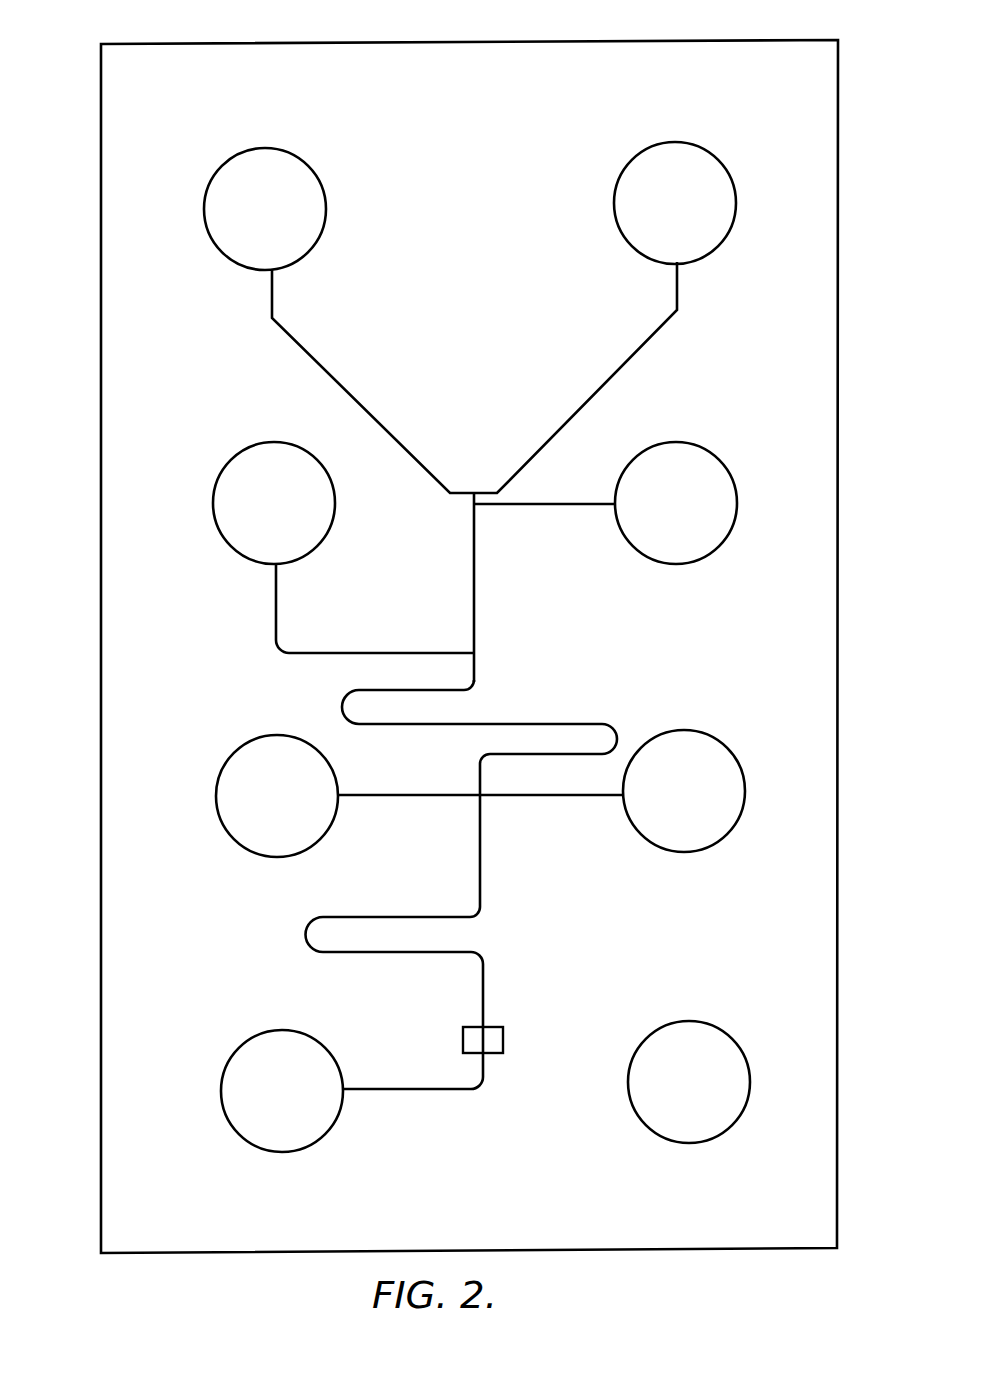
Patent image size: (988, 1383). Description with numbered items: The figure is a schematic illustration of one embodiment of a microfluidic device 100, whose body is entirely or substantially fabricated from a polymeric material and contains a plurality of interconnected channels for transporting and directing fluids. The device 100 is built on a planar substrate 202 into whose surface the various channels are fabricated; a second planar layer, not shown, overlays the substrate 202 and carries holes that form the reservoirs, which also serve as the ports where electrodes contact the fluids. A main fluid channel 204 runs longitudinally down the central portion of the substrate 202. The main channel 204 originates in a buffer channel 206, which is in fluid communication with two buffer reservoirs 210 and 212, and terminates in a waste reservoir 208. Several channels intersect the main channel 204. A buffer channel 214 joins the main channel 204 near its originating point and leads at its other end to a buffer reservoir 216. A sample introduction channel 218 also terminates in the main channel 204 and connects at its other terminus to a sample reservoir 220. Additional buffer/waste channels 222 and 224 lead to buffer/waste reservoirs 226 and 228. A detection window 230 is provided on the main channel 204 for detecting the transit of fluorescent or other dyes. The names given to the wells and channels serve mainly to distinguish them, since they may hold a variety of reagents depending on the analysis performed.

The microfluidic device 100 is at (94, 16).
The planar substrate 202 is at (791, 37).
The main fluid channel 204 is at (476, 606).
The buffer channel 206 is at (385, 430).
The waste reservoir 208 is at (306, 1030).
The buffer reservoir 210 is at (297, 158).
The buffer reservoir 212 is at (713, 155).
The buffer channel 214 is at (540, 502).
The buffer reservoir 216 is at (706, 450).
The sample introduction channel 218 is at (365, 653).
The sample reservoir 220 is at (326, 477).
The buffer/waste channel 222 is at (378, 796).
The buffer/waste channel 224 is at (546, 781).
The buffer/waste reservoir 226 is at (271, 738).
The buffer/waste reservoir 228 is at (703, 734).
The detection window 230 is at (497, 1027).